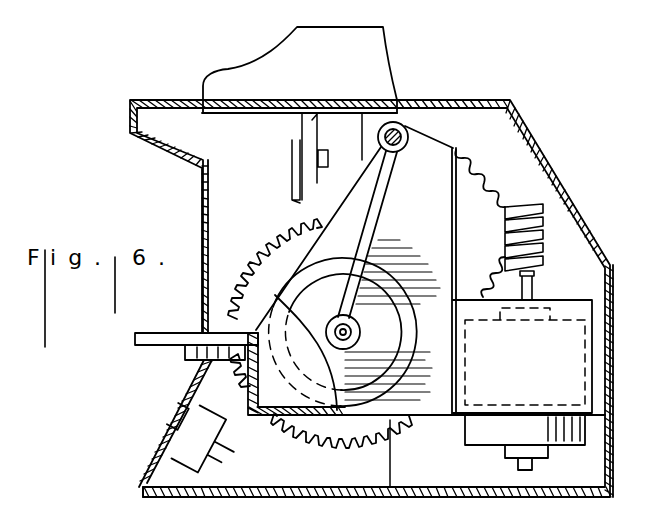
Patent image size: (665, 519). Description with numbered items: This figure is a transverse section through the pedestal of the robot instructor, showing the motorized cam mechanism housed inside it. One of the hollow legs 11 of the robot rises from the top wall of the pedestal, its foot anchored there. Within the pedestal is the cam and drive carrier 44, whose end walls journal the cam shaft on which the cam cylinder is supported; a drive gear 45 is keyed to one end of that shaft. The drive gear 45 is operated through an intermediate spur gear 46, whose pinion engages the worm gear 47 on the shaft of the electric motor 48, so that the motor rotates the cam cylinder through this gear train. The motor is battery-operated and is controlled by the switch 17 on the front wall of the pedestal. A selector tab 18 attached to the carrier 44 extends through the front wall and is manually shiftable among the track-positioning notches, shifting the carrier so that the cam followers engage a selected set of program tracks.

The hollow legs 11 is at (385, 68).
The switch 17 is at (175, 460).
The selector tab 18 is at (147, 345).
The cam and drive carrier 44 is at (440, 160).
The drive gear 45 is at (276, 245).
The intermediate spur gear 46 is at (487, 197).
The worm gear 47 is at (545, 252).
The electric motor 48 is at (580, 323).